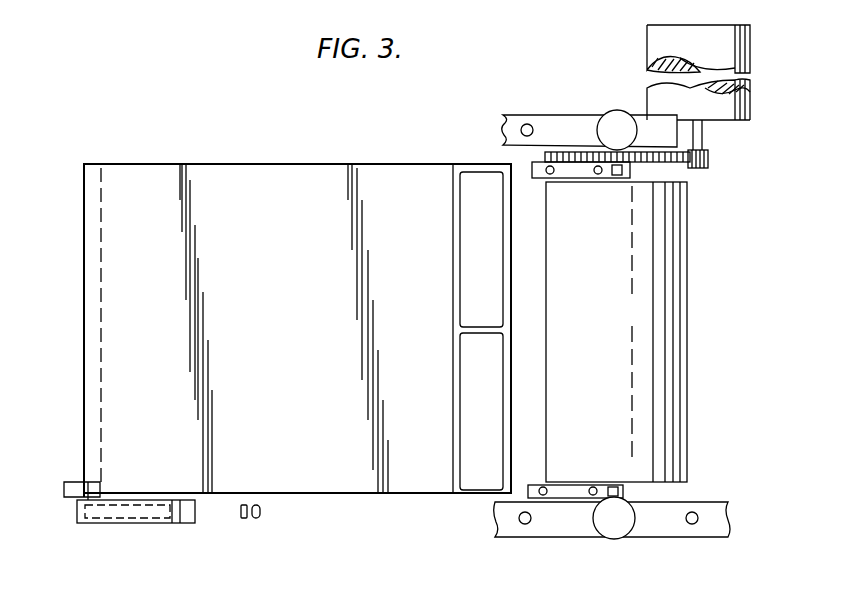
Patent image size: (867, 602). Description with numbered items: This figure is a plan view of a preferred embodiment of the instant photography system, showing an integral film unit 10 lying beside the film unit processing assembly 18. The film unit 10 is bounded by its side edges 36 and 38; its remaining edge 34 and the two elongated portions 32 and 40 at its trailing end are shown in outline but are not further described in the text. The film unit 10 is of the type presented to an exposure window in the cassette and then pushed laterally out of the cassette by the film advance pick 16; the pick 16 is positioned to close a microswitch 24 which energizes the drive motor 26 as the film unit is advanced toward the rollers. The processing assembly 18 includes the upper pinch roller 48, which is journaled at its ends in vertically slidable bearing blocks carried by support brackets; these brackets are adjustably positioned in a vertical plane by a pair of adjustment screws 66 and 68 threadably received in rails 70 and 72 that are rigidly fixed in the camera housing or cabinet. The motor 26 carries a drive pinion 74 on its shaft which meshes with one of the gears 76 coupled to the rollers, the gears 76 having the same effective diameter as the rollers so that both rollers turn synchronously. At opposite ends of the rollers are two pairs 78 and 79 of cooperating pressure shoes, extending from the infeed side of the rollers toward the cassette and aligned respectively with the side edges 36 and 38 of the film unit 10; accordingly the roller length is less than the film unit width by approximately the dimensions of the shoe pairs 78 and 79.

The integral film unit 10 is at (285, 162).
The film advance pick 16 is at (138, 528).
The film unit processing assembly 18 is at (655, 332).
The microswitch 24 is at (250, 521).
The drive motor 26 is at (718, 53).
The panel 32 is at (506, 264).
The side wall 34 is at (84, 335).
The side edge of the film unit 36 is at (245, 163).
The side edge of the film unit 38 is at (356, 490).
The panel 40 is at (460, 330).
The upper pinch roller 48 is at (632, 320).
The adjustment screw 66 is at (612, 530).
The adjustment screw 68 is at (617, 118).
The rail 70 is at (553, 522).
The rail 72 is at (552, 125).
The drive pinion 74 is at (709, 161).
The meshing gears 76 is at (676, 161).
The pressure shoe pair 78 is at (565, 173).
The pressure shoe pair 79 is at (577, 499).